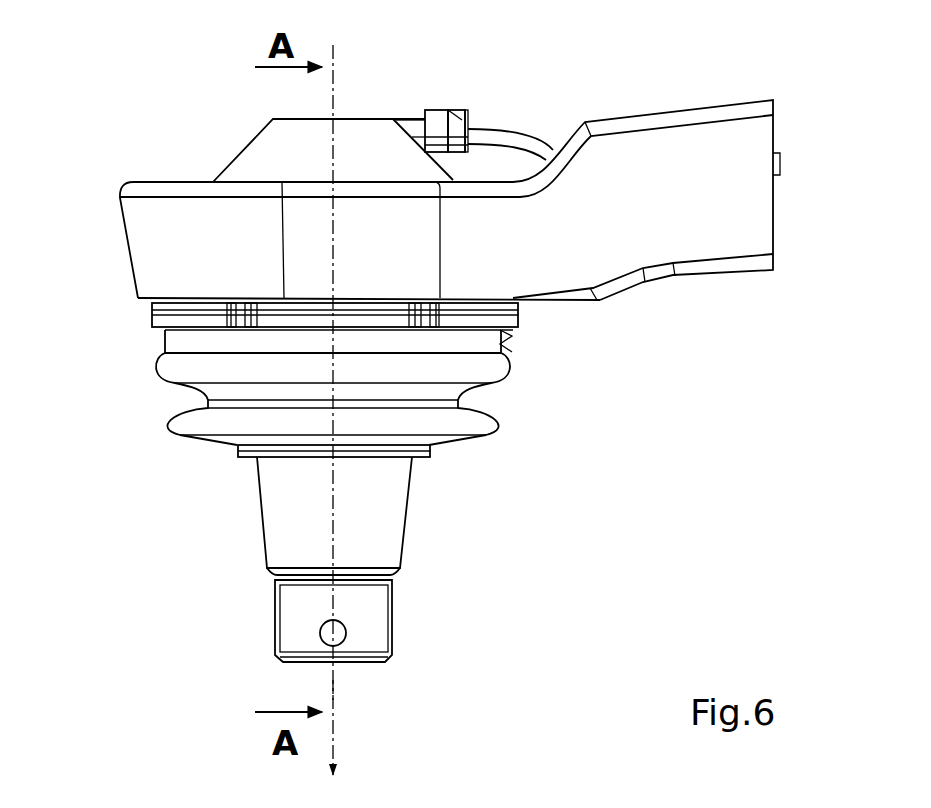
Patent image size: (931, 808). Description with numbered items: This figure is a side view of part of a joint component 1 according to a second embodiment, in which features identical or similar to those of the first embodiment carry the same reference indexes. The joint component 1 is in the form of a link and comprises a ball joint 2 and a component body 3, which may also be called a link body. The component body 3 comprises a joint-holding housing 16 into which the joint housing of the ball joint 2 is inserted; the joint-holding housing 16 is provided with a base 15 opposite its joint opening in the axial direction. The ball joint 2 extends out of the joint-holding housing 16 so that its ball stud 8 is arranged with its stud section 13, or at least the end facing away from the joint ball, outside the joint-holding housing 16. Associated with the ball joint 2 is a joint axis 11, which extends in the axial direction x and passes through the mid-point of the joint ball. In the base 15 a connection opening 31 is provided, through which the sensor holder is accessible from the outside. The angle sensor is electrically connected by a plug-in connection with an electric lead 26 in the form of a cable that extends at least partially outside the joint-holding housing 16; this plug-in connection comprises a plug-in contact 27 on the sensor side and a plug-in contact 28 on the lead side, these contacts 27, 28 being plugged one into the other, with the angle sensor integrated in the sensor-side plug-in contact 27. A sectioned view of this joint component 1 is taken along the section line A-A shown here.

The joint component 1 is at (141, 96).
The ball joint 2 is at (163, 396).
The component body 3 is at (630, 104).
The ball stud 8 is at (418, 511).
The joint axis 11 is at (336, 688).
The stud section 13 is at (273, 515).
The base 15 is at (263, 153).
The joint-holding housing 16 is at (112, 258).
The electric lead 26 is at (512, 132).
The plug-in contact on the sensor side 27 is at (412, 128).
The plug-in contact on the lead side 28 is at (435, 135).
The connection opening 31 is at (397, 112).